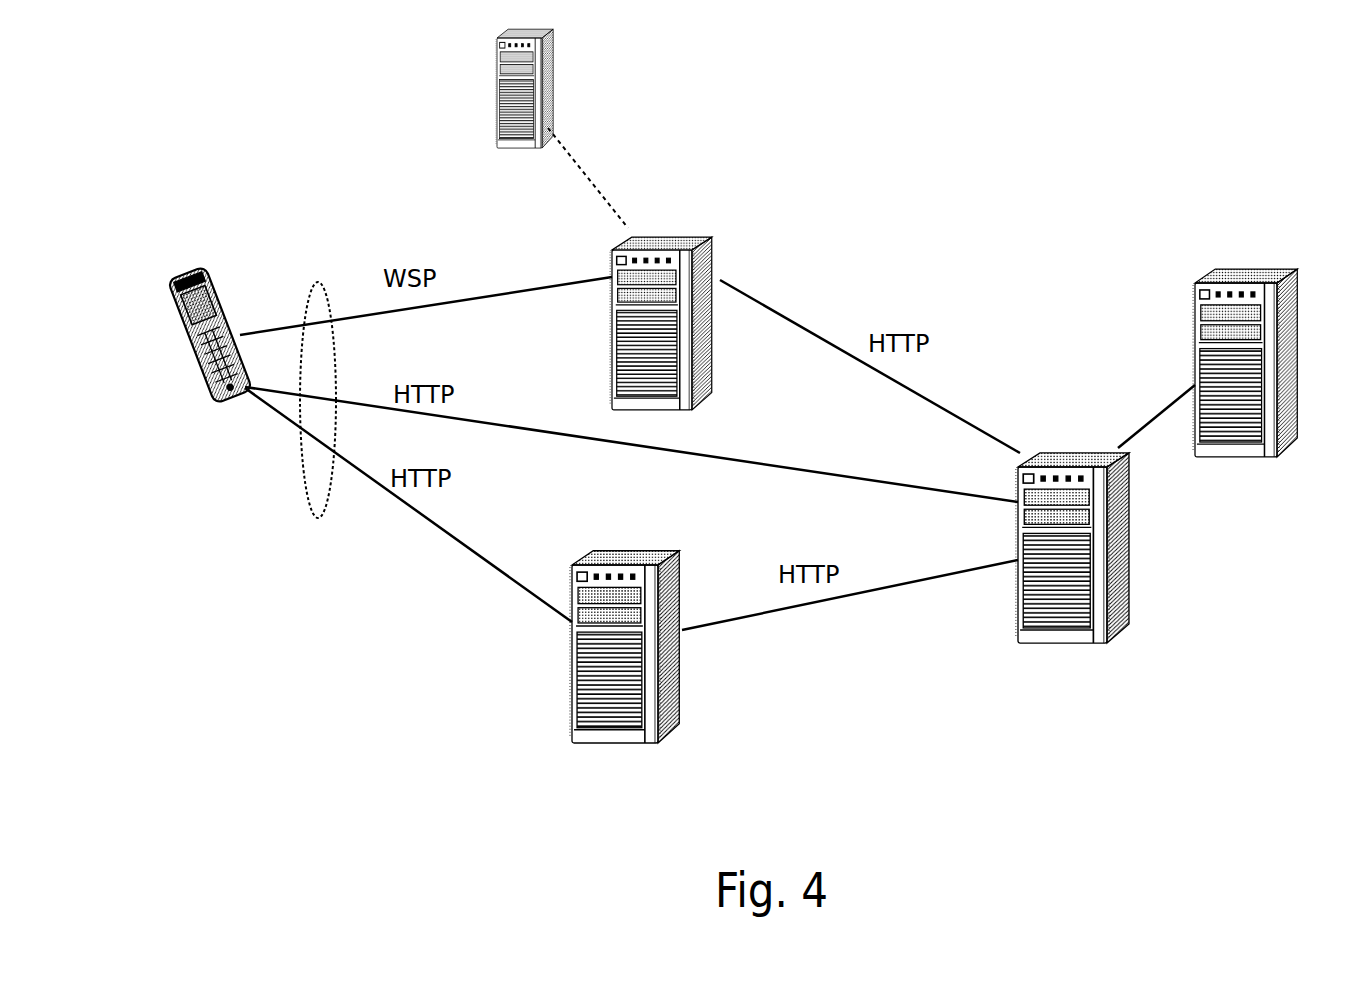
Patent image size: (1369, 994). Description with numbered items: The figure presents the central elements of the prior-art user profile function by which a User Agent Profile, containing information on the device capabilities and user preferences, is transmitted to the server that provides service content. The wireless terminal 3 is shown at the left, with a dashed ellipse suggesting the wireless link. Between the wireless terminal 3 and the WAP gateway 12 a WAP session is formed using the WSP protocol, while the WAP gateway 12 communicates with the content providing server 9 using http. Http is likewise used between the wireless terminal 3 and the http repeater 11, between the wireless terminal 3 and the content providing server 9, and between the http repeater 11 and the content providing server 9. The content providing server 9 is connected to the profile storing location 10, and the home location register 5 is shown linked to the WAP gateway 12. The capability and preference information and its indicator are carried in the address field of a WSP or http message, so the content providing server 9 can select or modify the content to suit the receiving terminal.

The mobile terminal 3 is at (190, 270).
The home location register 5 is at (497, 93).
The content providing server 9 is at (1062, 447).
The profile storing location 10 is at (1250, 268).
The http repeater 11 is at (576, 722).
The WAP gateway 12 is at (700, 252).